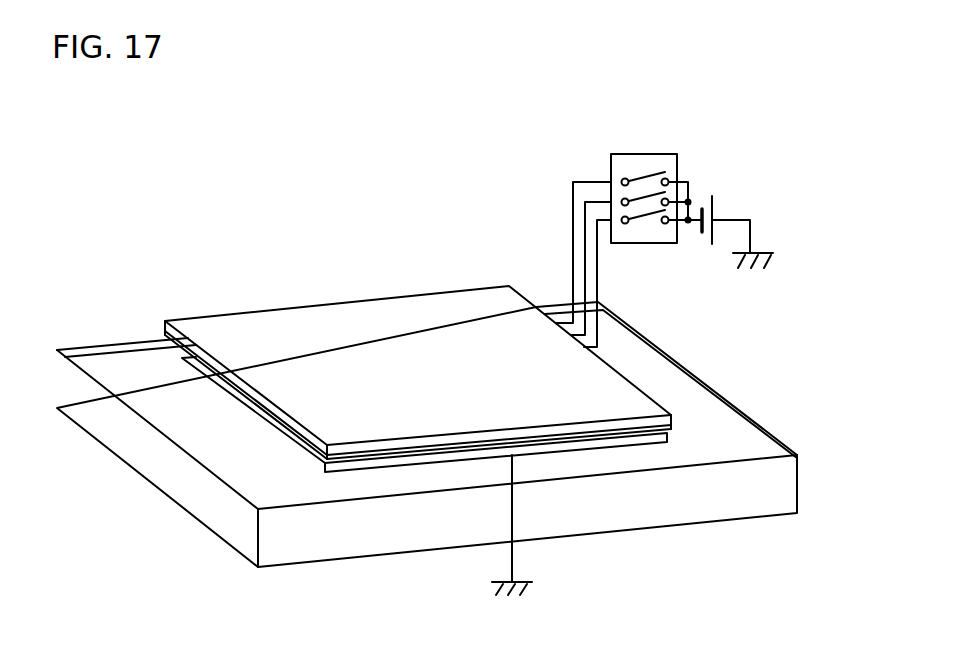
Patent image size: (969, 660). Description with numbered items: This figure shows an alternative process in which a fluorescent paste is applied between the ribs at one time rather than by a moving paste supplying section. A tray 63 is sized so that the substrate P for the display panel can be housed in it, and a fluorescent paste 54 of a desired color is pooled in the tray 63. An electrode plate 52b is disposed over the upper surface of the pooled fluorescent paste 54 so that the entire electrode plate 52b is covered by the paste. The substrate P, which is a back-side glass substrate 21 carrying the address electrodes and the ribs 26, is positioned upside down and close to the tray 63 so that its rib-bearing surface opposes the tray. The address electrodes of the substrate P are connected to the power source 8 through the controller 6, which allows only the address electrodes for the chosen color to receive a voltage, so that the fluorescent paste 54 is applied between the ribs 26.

The controller 6 is at (645, 153).
The power source 8 is at (703, 198).
The substrate for display panel P is at (443, 281).
The glass substrate 21 is at (319, 314).
The ribs 26 is at (673, 427).
The electrode plate 52b is at (367, 470).
The fluorescent paste 54 is at (753, 452).
The tray 63 is at (627, 503).